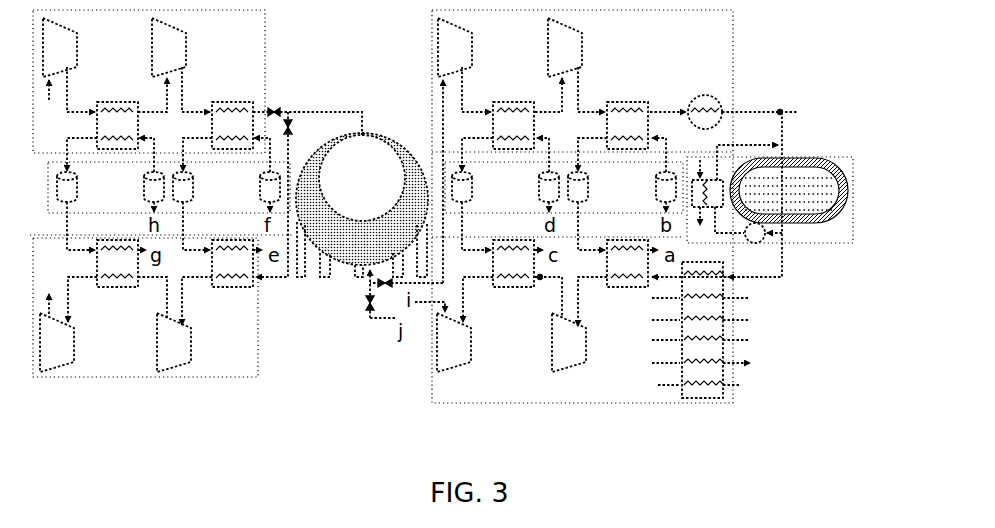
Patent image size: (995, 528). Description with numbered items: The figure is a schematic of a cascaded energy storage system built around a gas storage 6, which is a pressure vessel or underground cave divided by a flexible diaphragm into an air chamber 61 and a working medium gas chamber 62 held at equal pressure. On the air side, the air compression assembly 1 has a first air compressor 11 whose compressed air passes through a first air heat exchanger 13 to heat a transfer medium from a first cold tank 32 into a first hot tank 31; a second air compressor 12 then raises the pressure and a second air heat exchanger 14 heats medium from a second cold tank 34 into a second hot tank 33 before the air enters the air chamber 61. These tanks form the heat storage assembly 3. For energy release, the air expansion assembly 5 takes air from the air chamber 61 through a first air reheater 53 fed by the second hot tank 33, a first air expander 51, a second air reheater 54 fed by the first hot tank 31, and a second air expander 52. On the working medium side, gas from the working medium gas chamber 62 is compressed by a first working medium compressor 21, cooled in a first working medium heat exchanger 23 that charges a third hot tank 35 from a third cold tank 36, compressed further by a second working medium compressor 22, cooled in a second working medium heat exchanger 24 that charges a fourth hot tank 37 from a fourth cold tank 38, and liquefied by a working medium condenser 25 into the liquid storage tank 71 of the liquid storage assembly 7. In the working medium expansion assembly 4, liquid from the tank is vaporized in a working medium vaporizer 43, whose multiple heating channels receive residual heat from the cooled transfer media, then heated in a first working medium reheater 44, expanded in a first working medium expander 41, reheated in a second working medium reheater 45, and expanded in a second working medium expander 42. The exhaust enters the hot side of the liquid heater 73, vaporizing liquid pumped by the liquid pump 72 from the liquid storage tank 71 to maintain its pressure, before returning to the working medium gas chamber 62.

The air compression assembly 1 is at (260, 48).
The first air compressor 11 is at (80, 52).
The second air compressor 12 is at (187, 52).
The first air heat exchanger 13 is at (117, 125).
The second air heat exchanger 14 is at (232, 125).
The first working medium compressor 21 is at (466, 42).
The second working medium compressor 22 is at (548, 56).
The first working medium heat exchanger 23 is at (513, 125).
The second working medium heat exchanger 24 is at (627, 125).
The working medium condenser 25 is at (694, 98).
The heat storage assembly 3 is at (52, 210).
The first hot tank 31 is at (78, 184).
The first cold tank 32 is at (146, 182).
The second hot tank 33 is at (194, 186).
The second cold tank 34 is at (262, 182).
The third hot tank 35 is at (473, 186).
The third cold tank 36 is at (540, 188).
The fourth hot tank 37 is at (594, 182).
The fourth cold tank 38 is at (658, 185).
The working medium expansion assembly 4 is at (440, 385).
The first working medium expander 41 is at (553, 333).
The second working medium expander 42 is at (472, 330).
The working medium vaporizer 43 is at (686, 268).
The first working medium reheater 44 is at (627, 263).
The second working medium reheater 45 is at (513, 263).
The air expansion assembly 5 is at (256, 368).
The first air expander 51 is at (194, 333).
The second air expander 52 is at (78, 333).
The first air reheater 53 is at (232, 263).
The second air reheater 54 is at (117, 263).
The gas storage 6 is at (362, 152).
The air chamber 61 is at (380, 140).
The working medium gas chamber 62 is at (405, 152).
The liquid storage assembly 7 is at (846, 240).
The liquid storage tank 71 is at (846, 186).
The liquid pump 72 is at (764, 242).
The liquid heater 73 is at (705, 182).